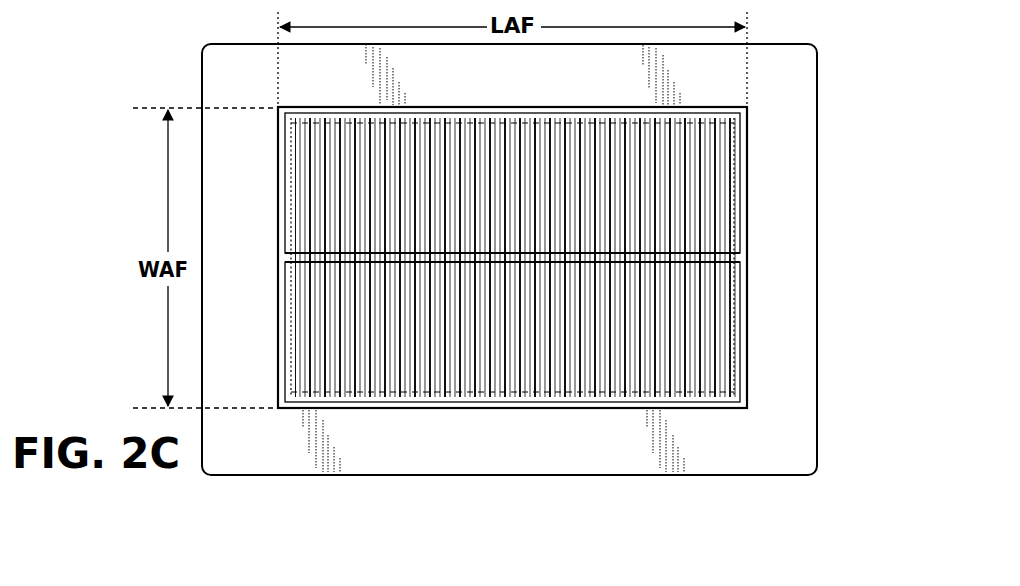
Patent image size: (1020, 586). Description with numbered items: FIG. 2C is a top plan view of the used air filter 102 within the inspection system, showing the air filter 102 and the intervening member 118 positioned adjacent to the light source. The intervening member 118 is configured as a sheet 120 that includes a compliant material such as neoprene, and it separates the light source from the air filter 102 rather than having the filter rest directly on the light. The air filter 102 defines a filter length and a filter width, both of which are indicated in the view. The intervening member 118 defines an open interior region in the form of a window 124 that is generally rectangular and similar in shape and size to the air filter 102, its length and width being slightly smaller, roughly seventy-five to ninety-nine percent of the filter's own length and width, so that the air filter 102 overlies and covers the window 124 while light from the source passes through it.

The intervening member 118 is at (822, 100).
The sheet 120 is at (787, 175).
The air filter 102 is at (697, 233).
The window 124 is at (694, 409).